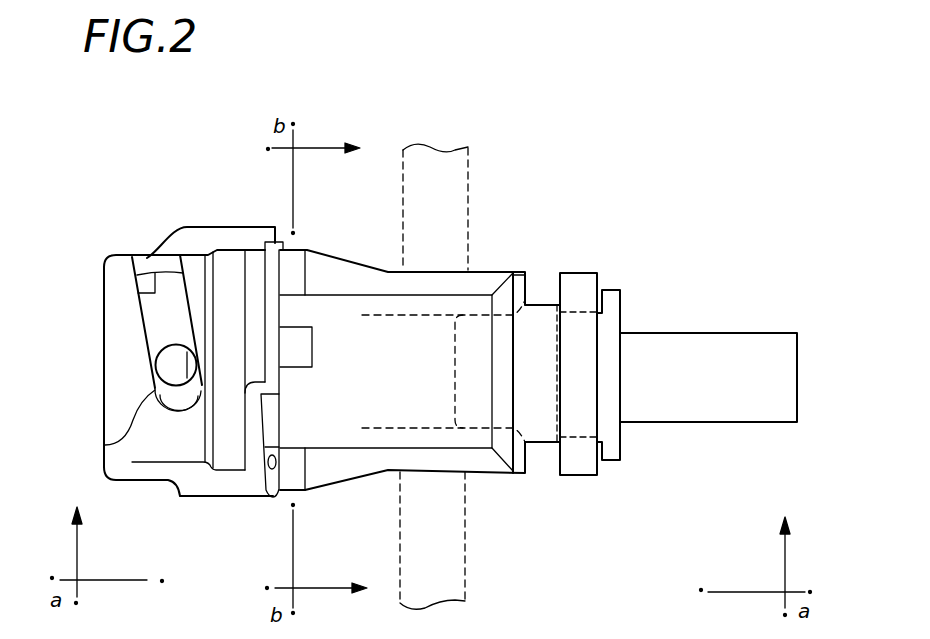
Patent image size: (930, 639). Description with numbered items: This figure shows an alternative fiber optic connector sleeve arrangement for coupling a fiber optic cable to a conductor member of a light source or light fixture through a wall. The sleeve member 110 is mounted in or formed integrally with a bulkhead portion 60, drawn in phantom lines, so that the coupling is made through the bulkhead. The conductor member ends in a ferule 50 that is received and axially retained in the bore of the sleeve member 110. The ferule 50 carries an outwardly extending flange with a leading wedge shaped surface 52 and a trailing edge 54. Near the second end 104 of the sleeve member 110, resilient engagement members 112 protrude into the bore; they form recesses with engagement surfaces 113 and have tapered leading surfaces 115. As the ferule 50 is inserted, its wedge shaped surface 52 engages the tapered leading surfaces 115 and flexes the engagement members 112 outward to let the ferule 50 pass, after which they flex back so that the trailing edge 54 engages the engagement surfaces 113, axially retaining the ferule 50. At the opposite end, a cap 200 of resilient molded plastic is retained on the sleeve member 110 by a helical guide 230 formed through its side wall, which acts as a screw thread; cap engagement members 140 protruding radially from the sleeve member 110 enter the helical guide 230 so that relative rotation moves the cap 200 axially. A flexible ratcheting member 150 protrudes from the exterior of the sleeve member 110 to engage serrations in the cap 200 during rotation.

The cap 200 is at (102, 337).
The helical guide 230 is at (147, 258).
The cap engagement member 140 is at (105, 445).
The flexible ratcheting member 150 is at (300, 355).
The sleeve member 110 is at (402, 375).
The bulkhead portion 60 is at (452, 213).
The leading wedge shaped surface 52 is at (530, 277).
The engagement surface 113 is at (555, 290).
The resilient engagement member 112 is at (578, 273).
The tapered leading surface 115 is at (610, 290).
The ferule 50 is at (649, 380).
The trailing edge 54 is at (560, 387).
The second end 104 is at (585, 357).